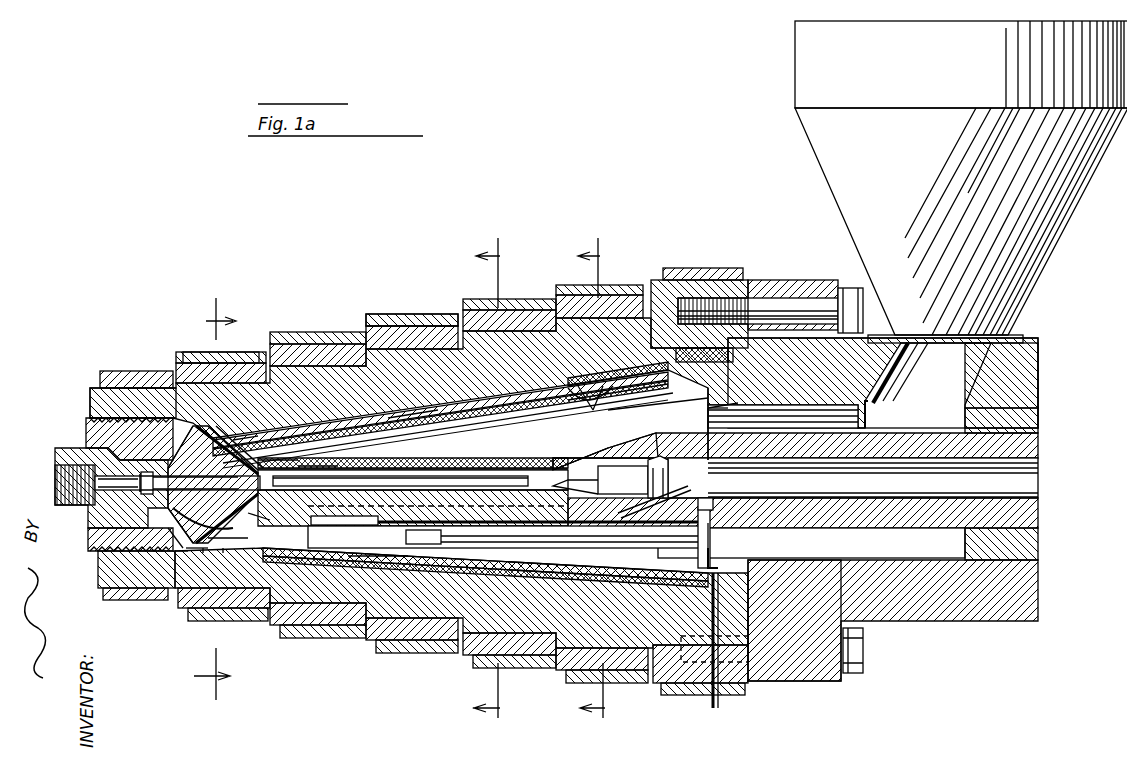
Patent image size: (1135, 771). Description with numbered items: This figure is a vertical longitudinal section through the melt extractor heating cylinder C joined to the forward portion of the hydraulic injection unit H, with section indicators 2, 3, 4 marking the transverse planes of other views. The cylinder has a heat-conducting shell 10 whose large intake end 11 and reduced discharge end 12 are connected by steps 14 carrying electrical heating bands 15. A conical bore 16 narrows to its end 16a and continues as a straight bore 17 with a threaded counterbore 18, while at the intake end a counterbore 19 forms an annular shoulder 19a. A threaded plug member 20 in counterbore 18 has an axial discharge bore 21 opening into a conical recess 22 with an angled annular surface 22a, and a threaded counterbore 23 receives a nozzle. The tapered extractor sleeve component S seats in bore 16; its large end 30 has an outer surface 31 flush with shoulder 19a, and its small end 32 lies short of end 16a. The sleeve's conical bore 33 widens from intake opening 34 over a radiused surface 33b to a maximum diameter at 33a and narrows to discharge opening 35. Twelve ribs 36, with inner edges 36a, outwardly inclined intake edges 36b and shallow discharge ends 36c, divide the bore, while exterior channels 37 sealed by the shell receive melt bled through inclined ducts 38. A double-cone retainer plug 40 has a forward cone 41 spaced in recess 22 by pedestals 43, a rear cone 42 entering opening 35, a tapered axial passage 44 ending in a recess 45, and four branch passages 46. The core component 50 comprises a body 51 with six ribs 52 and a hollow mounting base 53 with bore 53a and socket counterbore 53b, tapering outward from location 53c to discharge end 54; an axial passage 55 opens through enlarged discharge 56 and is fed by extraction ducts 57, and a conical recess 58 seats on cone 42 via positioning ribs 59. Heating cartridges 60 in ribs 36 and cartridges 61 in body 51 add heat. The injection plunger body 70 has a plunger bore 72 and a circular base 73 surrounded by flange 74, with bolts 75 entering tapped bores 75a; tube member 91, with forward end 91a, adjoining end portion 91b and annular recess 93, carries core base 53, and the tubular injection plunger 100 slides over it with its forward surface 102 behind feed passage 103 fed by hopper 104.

The body or shell 10 is at (550, 648).
The intake end 11 is at (738, 272).
The injection discharge end 12 is at (82, 380).
The steps 14 is at (120, 369).
The electrical heating bands 15 is at (261, 343).
The conical bore 16 is at (610, 366).
The reduced diameter end of conical bore 16a is at (212, 545).
The straight bore 17 is at (195, 545).
The internally threaded counterbore 18 is at (105, 545).
The counterbore 19 is at (724, 344).
The annular shoulder 19a is at (718, 345).
The nut or plug member 20 is at (76, 423).
The injection discharge bore 21 is at (60, 445).
The conical recess 22 is at (170, 540).
The annular surface 22a is at (180, 545).
The internally threaded counterbore 23 is at (48, 492).
The large diameter end of sleeve 30 is at (685, 558).
The outer surface 31 is at (725, 372).
The reduced diameter inner discharge end 32 is at (230, 420).
The conical bore 33 is at (508, 400).
The location of maximum diameter 33a is at (655, 382).
The annular surface 33b is at (680, 400).
The intake opening 34 is at (712, 403).
The discharge end opening 35 is at (215, 535).
The ribs or flutes 36 is at (460, 403).
The inner edges of ribs 36a is at (518, 407).
The intake edges of ribs 36b is at (708, 401).
The inner discharge ends of ribs 36c is at (232, 432).
The channels 37 is at (450, 394).
The extractor ducts 38 is at (590, 409).
The retainer or distributor plug 40 is at (160, 520).
The forward conical portion 41 is at (156, 484).
The rear conical portion 42 is at (263, 522).
The mounting pedestals 43 is at (198, 477).
The axial passage 44 is at (190, 512).
The recess 45 is at (128, 485).
The branch passages 46 is at (200, 418).
The core component 50 is at (373, 560).
The cylindrical body 51 is at (472, 462).
The ribs or flutes 52 is at (477, 432).
The mounting base portion 53 is at (700, 496).
The axial bore 53a is at (597, 488).
The socket forming counterbore 53b is at (715, 498).
The taper origin location 53c is at (543, 459).
The discharge end of core component 54 is at (262, 455).
The axial flow passage 55 is at (320, 486).
The enlarged diameter discharge 56 is at (292, 455).
The melt extraction ducts 57 is at (386, 452).
The conical recess 58 is at (215, 448).
The seating and positioning ribs 59 is at (262, 486).
The heating cartridges 60 is at (570, 547).
The heating cartridges 61 is at (470, 516).
The injection plunger body 70 is at (971, 615).
The plunger bore 72 is at (866, 404).
The circular base 73 is at (745, 580).
The annular flange 74 is at (803, 272).
The bolts or machine screws 75 is at (770, 290).
The tapped bores 75a is at (705, 292).
The tube member 91 is at (853, 478).
The forward end of tube member 91a is at (665, 490).
The shaft front end 91b is at (675, 452).
The annular recess 93 is at (710, 410).
The tubular injection plunger 100 is at (1010, 408).
The forward end surface 102 is at (1005, 380).
The plastic feed passage 103 is at (1000, 330).
The feed hopper 104 is at (815, 134).
The heating cylinder C is at (384, 296).
The extractor sleeve component S is at (418, 404).
The hydraulic injection unit H is at (907, 638).
The section line 2 is at (598, 483).
The section line 3 is at (495, 483).
The section line 4 is at (208, 499).